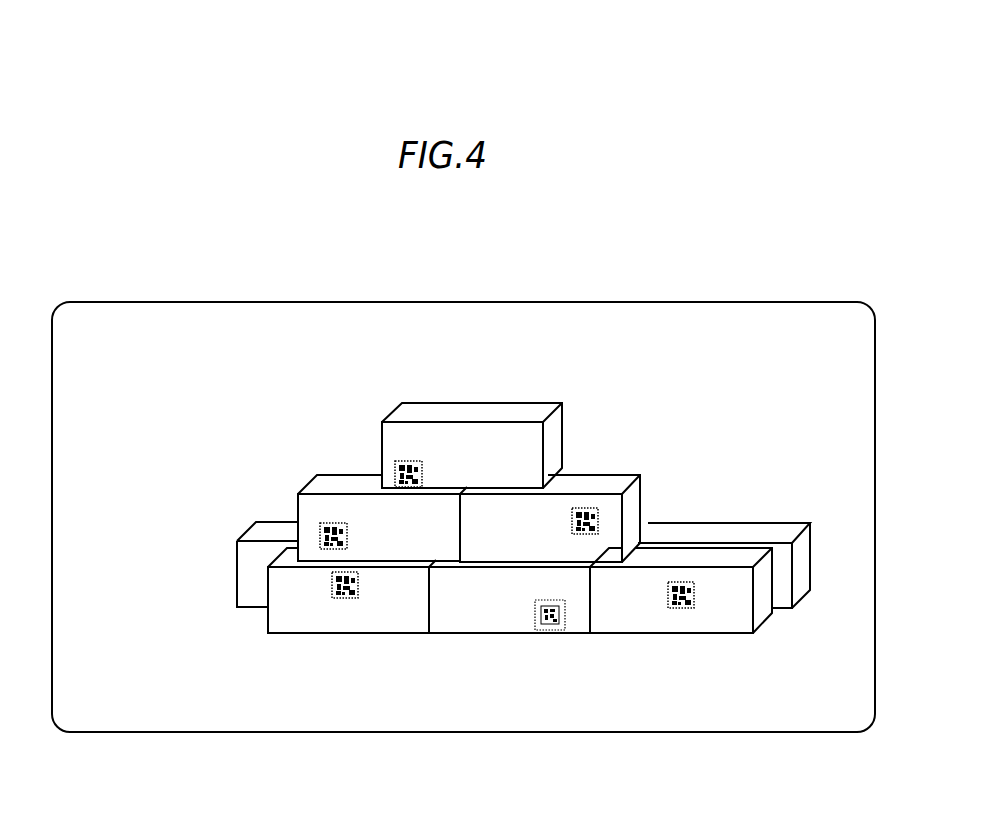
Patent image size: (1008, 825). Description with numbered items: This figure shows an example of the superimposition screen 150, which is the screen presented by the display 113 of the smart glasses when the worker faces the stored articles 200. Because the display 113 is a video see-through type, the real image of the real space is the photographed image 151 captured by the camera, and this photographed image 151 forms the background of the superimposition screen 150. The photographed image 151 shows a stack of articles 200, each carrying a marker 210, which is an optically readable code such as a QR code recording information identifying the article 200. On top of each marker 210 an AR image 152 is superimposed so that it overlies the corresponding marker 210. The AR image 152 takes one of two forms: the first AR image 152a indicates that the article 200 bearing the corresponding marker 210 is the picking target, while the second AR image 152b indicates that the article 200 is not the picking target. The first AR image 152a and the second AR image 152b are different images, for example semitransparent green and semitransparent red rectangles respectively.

The display 113 is at (778, 300).
The superimposition screen 150 is at (508, 302).
The photographed image 151 is at (297, 320).
The article 200 is at (471, 408).
The marker 210 is at (348, 598).
The AR image 152 is at (444, 540).
The first AR image 152a is at (533, 614).
The second AR image 152b is at (395, 473).